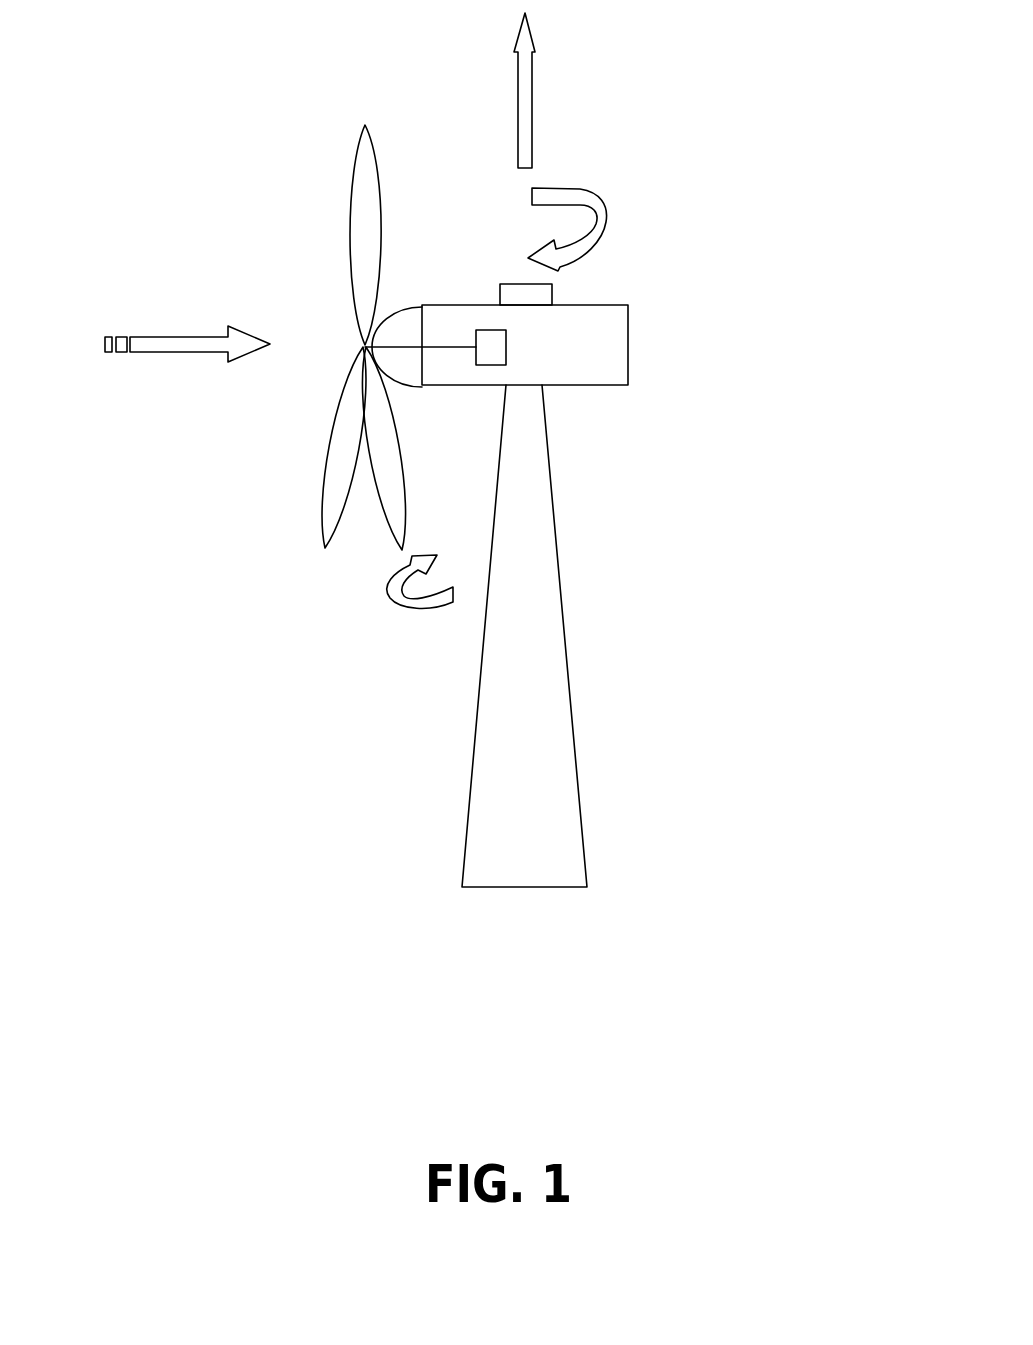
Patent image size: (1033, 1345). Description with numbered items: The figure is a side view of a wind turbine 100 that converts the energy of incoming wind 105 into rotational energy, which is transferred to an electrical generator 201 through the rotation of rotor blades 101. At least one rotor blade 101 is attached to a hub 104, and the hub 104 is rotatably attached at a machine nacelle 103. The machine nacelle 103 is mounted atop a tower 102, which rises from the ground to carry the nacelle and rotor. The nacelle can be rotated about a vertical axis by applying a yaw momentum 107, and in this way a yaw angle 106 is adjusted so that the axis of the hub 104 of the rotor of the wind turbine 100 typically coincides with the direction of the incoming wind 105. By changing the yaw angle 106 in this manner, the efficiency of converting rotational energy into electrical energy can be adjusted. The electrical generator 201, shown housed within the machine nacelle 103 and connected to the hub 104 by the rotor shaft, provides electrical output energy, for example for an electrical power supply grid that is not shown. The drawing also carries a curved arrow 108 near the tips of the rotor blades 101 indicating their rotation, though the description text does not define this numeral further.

The wind turbine 100 is at (697, 93).
The rotor blade 101 is at (350, 253).
The tower 102 is at (573, 667).
The machine nacelle 103 is at (629, 350).
The hub 104 is at (380, 318).
The incoming wind 105 is at (228, 358).
The yaw angle 106 is at (598, 231).
The yaw momentum 107 is at (498, 81).
The rotor rotation direction 108 is at (400, 583).
The electrical generator 201 is at (488, 366).